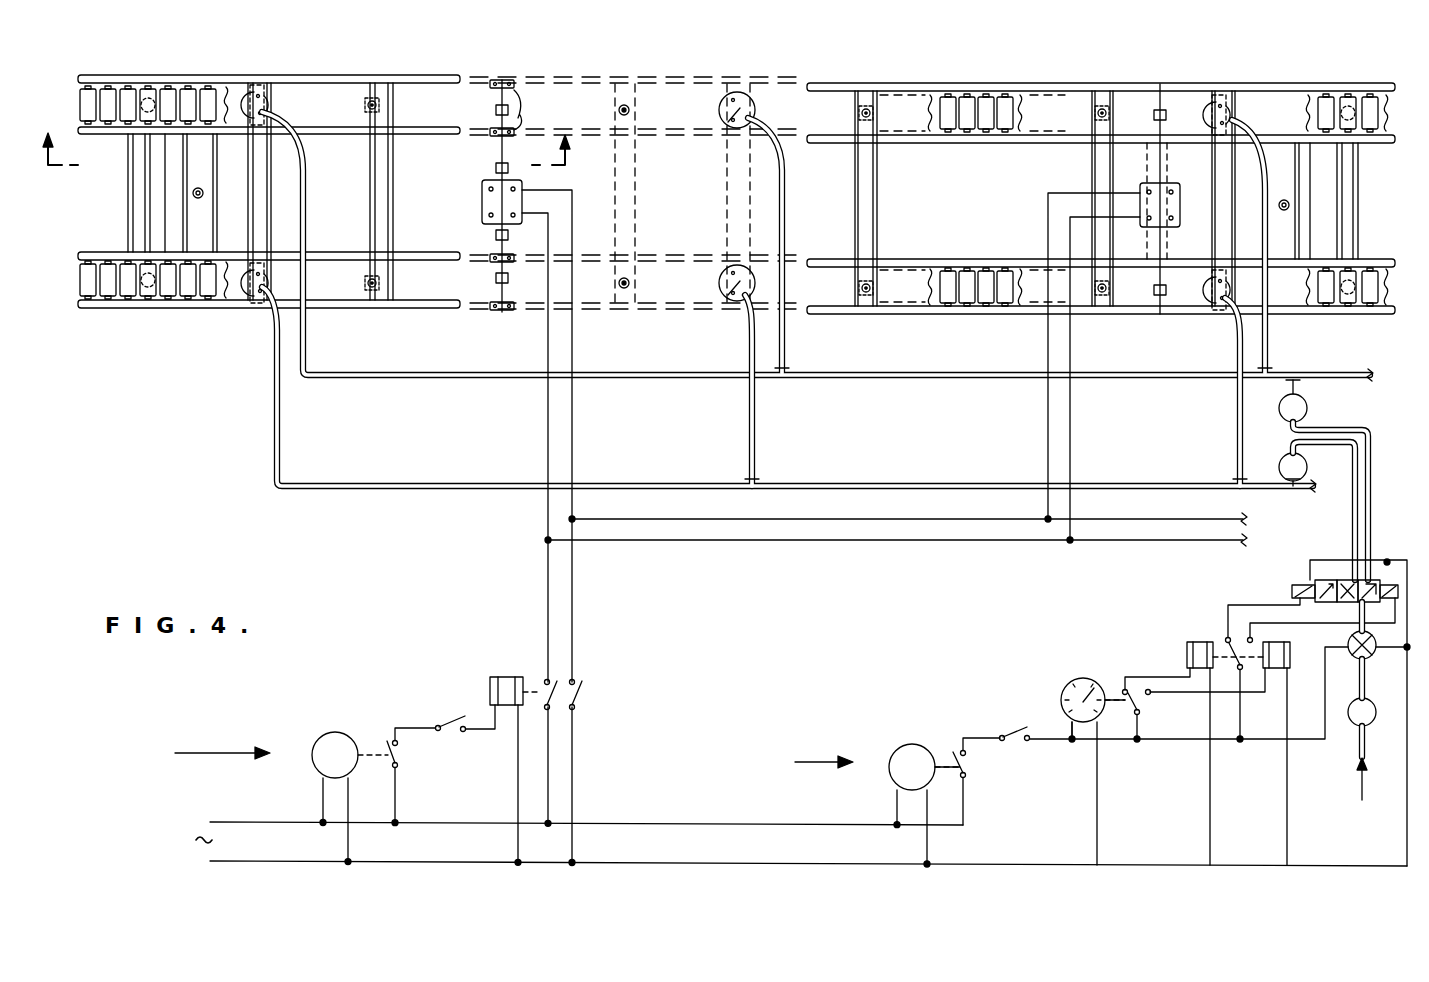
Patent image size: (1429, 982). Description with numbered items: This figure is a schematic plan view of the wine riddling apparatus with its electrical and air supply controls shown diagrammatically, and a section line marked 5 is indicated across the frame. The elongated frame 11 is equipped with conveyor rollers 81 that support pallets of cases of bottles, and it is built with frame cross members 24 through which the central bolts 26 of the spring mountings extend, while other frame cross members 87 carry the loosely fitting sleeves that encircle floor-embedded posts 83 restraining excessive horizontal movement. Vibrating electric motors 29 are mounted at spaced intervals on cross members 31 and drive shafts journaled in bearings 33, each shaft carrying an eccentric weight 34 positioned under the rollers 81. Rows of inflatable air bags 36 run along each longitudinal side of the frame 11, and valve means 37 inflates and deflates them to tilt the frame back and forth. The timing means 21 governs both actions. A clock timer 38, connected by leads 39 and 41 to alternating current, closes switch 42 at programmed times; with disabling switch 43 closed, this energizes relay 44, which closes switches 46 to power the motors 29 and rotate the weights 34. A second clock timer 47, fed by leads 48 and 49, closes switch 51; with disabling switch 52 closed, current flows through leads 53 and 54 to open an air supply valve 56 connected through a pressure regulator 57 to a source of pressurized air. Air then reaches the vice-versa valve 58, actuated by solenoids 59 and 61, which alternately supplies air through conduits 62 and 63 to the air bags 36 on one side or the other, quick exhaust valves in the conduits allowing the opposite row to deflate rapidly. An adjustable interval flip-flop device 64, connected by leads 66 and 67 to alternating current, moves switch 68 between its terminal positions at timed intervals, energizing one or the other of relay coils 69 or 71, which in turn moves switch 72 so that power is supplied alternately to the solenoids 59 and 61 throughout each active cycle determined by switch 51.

The section line 5- 5 is at (307, 150).
The frame 11 is at (290, 68).
The timing means 21 is at (495, 759).
The frame cross members 24 is at (128, 205).
The central bolt 26 is at (145, 80).
The electric motor 29 is at (480, 205).
The cross member 31 is at (1170, 172).
The bearings 33 is at (520, 106).
The weight 34 is at (494, 108).
The inflatable air bags 36 is at (272, 105).
The valve means 37 is at (1242, 572).
The clock timer 38 is at (324, 738).
The lead 39 is at (321, 797).
The lead 41 is at (346, 846).
The switch 42 is at (403, 775).
The disabling switch 43 is at (449, 720).
The relay 44 is at (506, 682).
The switches 46 is at (578, 706).
The clock timer 47 is at (903, 742).
The lead 48 is at (895, 800).
The lead 49 is at (925, 847).
The switch 51 is at (972, 776).
The disabling switch 52 is at (1015, 730).
The lead 53 is at (1300, 742).
The lead 54 is at (1407, 830).
The air supply valve 56 is at (1374, 655).
The pressure regulator 57 is at (1376, 716).
The vice-versa valve 58 is at (1340, 575).
The solenoid 59 is at (1300, 580).
The solenoid 61 is at (1398, 578).
The conduit 62 is at (362, 482).
The conduit 63 is at (366, 381).
The flip-flop device 64 is at (1082, 676).
The lead 66 is at (1070, 728).
The lead 67 is at (1097, 800).
The switch 68 is at (1142, 708).
The relay coil 69 is at (1187, 645).
The relay coil 71 is at (1290, 660).
The switch 72 is at (1230, 625).
The conveyor rollers 81 is at (210, 88).
The posts 83 is at (192, 196).
The frame cross members 87 is at (190, 165).